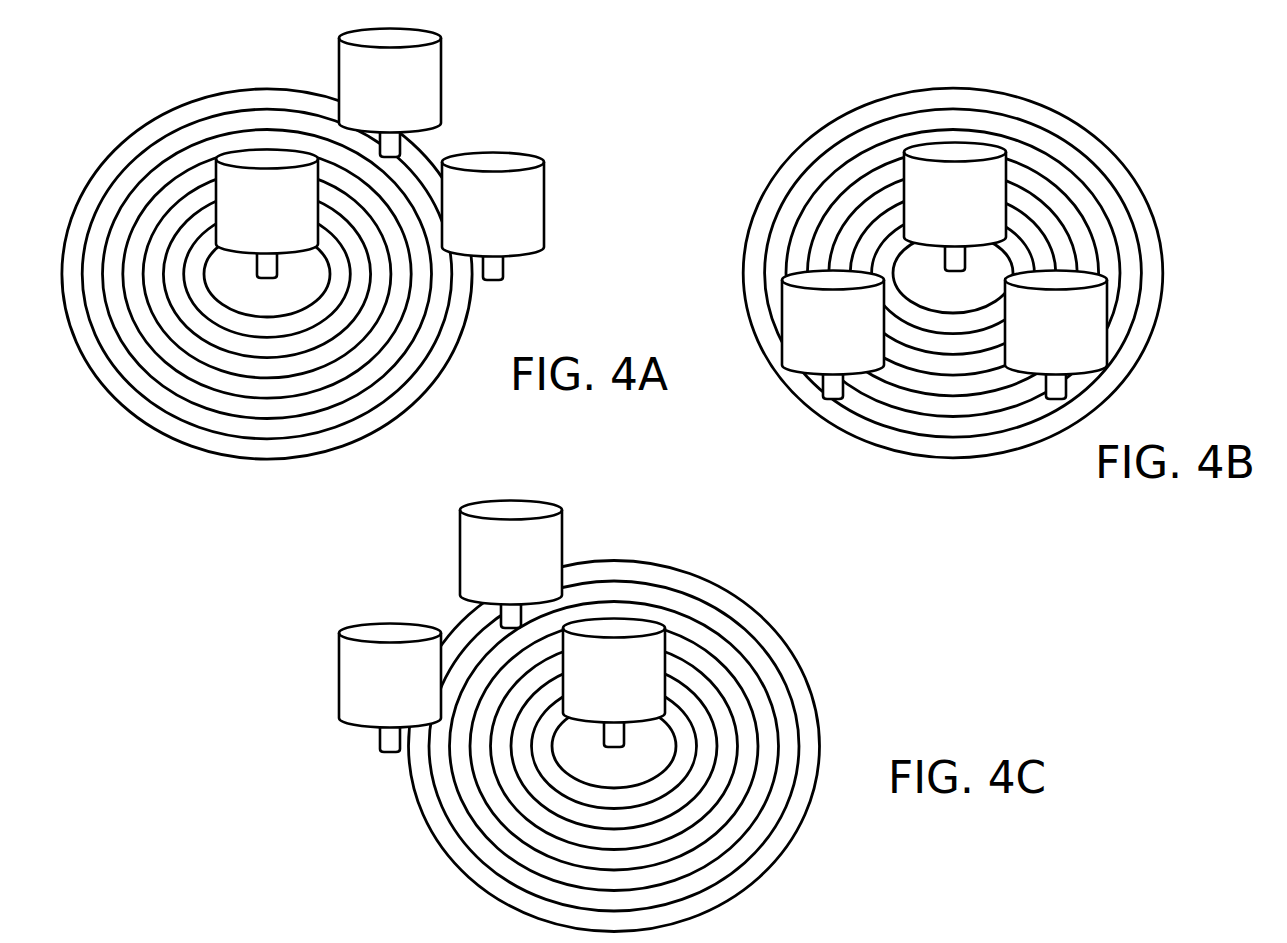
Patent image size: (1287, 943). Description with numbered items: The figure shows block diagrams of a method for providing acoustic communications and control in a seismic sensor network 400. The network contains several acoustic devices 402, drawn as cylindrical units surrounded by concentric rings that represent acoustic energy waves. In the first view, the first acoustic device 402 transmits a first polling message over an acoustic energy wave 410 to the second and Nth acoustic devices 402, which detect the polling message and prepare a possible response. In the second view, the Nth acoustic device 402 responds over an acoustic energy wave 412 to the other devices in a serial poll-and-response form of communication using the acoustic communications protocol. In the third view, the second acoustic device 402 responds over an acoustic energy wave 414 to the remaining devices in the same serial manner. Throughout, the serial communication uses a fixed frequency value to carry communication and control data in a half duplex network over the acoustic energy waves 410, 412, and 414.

In FIG. 4A, the seismic sensor network 400 is at (500, 113).
In FIG. 4B, the seismic sensor network 400 is at (1130, 113).
In FIG. 4C, the seismic sensor network 400 is at (632, 520).
In FIG. 4A, the acoustic device 402 is at (505, 245).
In FIG. 4B, the acoustic device 402 is at (813, 363).
In FIG. 4C, the acoustic device 402 is at (370, 716).
In FIG. 4A, the acoustic energy wave 410 is at (155, 117).
In FIG. 4B, the acoustic energy wave 412 is at (830, 122).
In FIG. 4C, the acoustic energy wave 414 is at (803, 675).